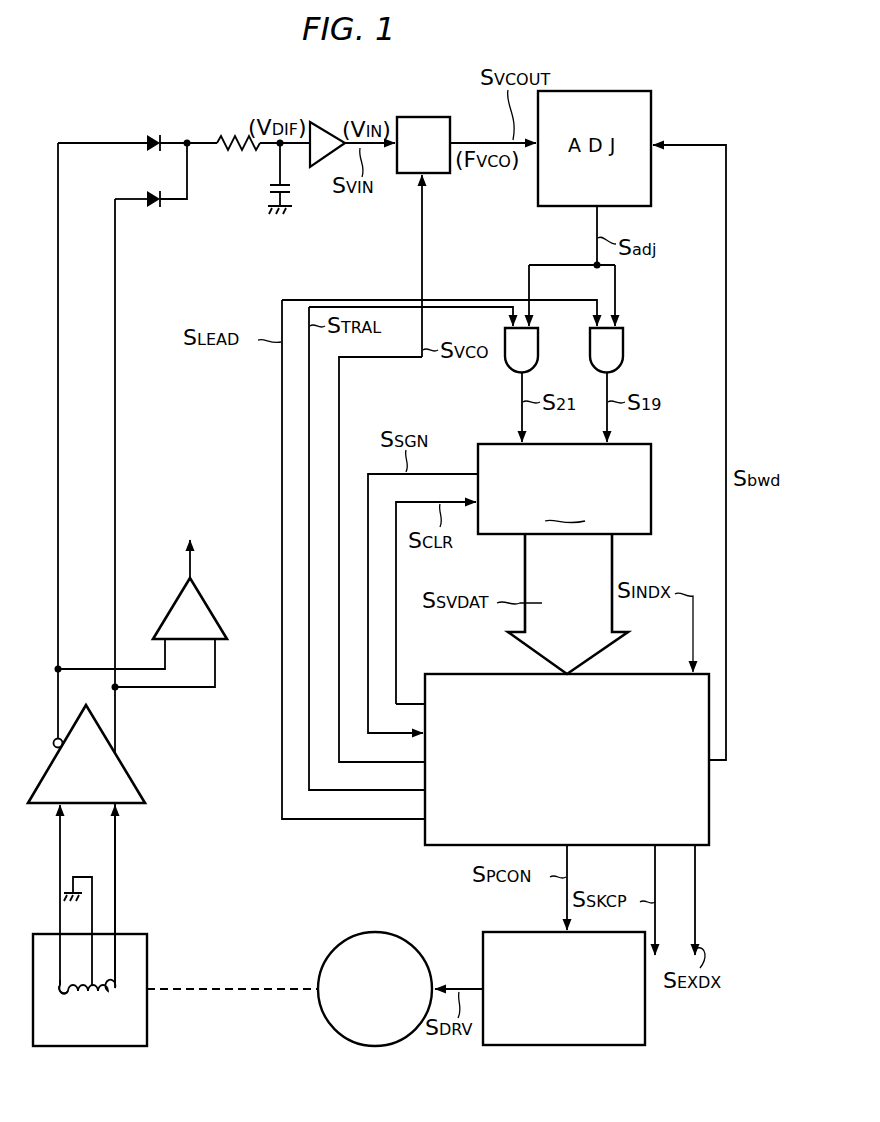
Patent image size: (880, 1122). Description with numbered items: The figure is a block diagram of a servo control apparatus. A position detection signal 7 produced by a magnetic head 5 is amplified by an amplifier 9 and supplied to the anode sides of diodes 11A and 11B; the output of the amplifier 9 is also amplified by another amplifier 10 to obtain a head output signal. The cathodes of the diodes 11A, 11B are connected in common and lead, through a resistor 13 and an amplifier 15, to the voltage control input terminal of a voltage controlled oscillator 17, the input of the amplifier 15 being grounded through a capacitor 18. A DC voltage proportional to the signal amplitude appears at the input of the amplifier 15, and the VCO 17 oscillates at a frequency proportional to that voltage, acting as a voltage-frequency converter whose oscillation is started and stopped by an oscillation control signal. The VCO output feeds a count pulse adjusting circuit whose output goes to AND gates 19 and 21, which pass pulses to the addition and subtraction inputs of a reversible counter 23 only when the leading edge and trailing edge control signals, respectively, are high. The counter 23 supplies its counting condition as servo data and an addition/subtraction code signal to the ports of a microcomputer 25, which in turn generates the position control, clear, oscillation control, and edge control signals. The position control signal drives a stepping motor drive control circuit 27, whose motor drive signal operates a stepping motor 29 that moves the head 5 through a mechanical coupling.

The magnetic head 5 is at (137, 934).
The position detection signal 7 is at (61, 842).
The amplifier 9 is at (113, 751).
The amplifier 10 is at (207, 600).
The diode 11A is at (150, 141).
The diode 11B is at (150, 197).
The resistor 13 is at (228, 140).
The amplifier 15 is at (328, 128).
The voltage controlled oscillator 17 is at (392, 133).
The capacitor 18 is at (270, 190).
The AND gate 19 is at (624, 337).
The AND gate 21 is at (539, 337).
The reversible counter 23 is at (652, 452).
The microcomputer 25 is at (442, 846).
The stepping motor drive control circuit 27 is at (506, 1046).
The stepping motor 29 is at (375, 1047).